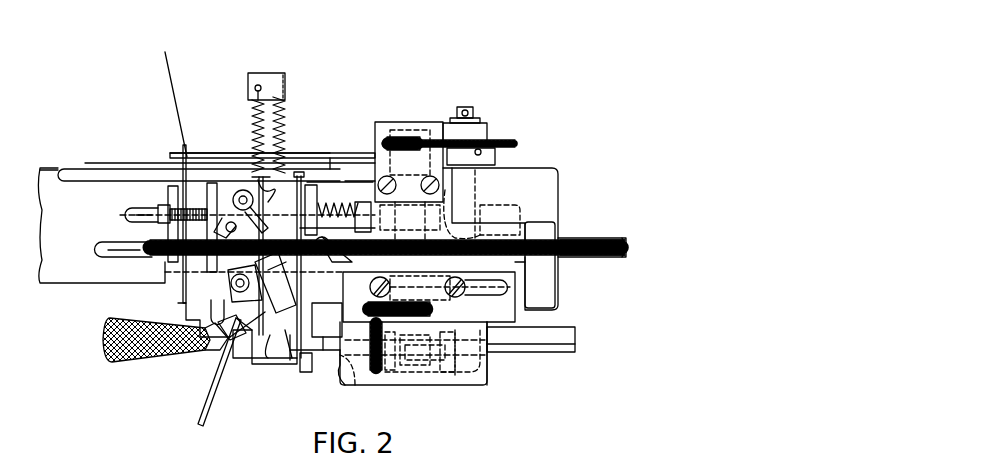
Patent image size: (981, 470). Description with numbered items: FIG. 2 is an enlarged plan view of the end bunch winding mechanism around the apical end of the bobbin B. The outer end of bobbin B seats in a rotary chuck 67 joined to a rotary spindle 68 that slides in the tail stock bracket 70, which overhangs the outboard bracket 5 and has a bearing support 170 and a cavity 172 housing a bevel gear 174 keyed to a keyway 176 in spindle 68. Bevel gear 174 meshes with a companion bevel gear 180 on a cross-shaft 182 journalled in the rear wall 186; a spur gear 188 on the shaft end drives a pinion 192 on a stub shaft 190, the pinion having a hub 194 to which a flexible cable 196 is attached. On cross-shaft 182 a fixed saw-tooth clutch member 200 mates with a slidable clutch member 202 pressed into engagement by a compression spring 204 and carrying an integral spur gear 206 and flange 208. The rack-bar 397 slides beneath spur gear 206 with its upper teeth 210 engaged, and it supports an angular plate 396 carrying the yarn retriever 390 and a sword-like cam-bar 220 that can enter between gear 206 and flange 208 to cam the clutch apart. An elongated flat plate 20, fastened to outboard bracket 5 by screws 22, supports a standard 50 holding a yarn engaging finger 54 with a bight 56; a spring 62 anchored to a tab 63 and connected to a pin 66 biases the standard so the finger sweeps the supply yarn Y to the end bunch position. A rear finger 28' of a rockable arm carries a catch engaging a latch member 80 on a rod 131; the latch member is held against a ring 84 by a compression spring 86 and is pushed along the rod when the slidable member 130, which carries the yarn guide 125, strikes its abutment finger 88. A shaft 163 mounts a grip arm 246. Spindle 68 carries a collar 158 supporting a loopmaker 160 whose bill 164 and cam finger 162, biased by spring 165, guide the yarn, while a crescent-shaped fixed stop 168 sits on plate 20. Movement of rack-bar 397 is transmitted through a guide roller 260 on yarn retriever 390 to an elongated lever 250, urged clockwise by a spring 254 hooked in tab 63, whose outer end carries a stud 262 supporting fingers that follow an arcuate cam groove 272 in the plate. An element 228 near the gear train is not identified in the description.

The outboard bracket 5 is at (560, 176).
The elongated flat plate 20 is at (493, 343).
The screws 22 is at (375, 300).
The rear finger 28' is at (289, 230).
The standard 50 is at (250, 275).
The yarn engaging finger 54 is at (202, 408).
The bight 56 is at (228, 343).
The spring 62 is at (256, 108).
The tab 63 is at (258, 80).
The pin 66 is at (323, 350).
The rotary chuck 67 is at (282, 365).
The rotary spindle 68 is at (340, 365).
The tail stock bracket 70 is at (455, 385).
The latch member 80 is at (299, 172).
The ring 84 is at (380, 270).
The compression spring 86 is at (356, 208).
The abutment finger 88 is at (206, 222).
The yarn guide 125 is at (207, 350).
The slidable member 130 is at (160, 212).
The rod 131 is at (128, 212).
The collar 158 is at (307, 372).
The loopmaker 160 is at (245, 370).
The cam finger 162 is at (255, 350).
The shaft 163 is at (115, 253).
The bill 164 is at (240, 365).
The spring 165 is at (288, 357).
The fixed stop 168 is at (292, 363).
The bearing support 170 is at (490, 385).
The cavity 172 is at (428, 385).
The bevel gear 174 is at (372, 380).
The keyway 176 is at (398, 385).
The companion bevel gear 180 is at (498, 323).
The cross-shaft 182 is at (388, 148).
The rear wall 186 is at (540, 168).
The spur gear 188 is at (392, 147).
The stub shaft 190 is at (465, 108).
The pinion 192 is at (498, 133).
The hub 194 is at (495, 160).
The flexible cable 196 is at (218, 183).
The saw-tooth clutch member 200 is at (420, 270).
The saw-tooth clutch member 202 is at (382, 180).
The compression spring 204 is at (460, 200).
The spur gear 206 is at (470, 225).
The flange 208 is at (455, 215).
The teeth 210 is at (608, 243).
The cam-bar 220 is at (500, 250).
The shaft 228 is at (418, 130).
The grip arm 246 is at (184, 150).
The elongated lever 250 is at (242, 190).
The spring 254 is at (280, 97).
The guide roller 260 is at (372, 282).
The stud 262 is at (233, 222).
The cam groove 272 is at (230, 283).
The yarn retriever 390 is at (223, 345).
The angular plate 396 is at (316, 326).
The rack-bar 397 is at (628, 247).
The bobbin B is at (105, 345).
The yarn Y is at (165, 52).